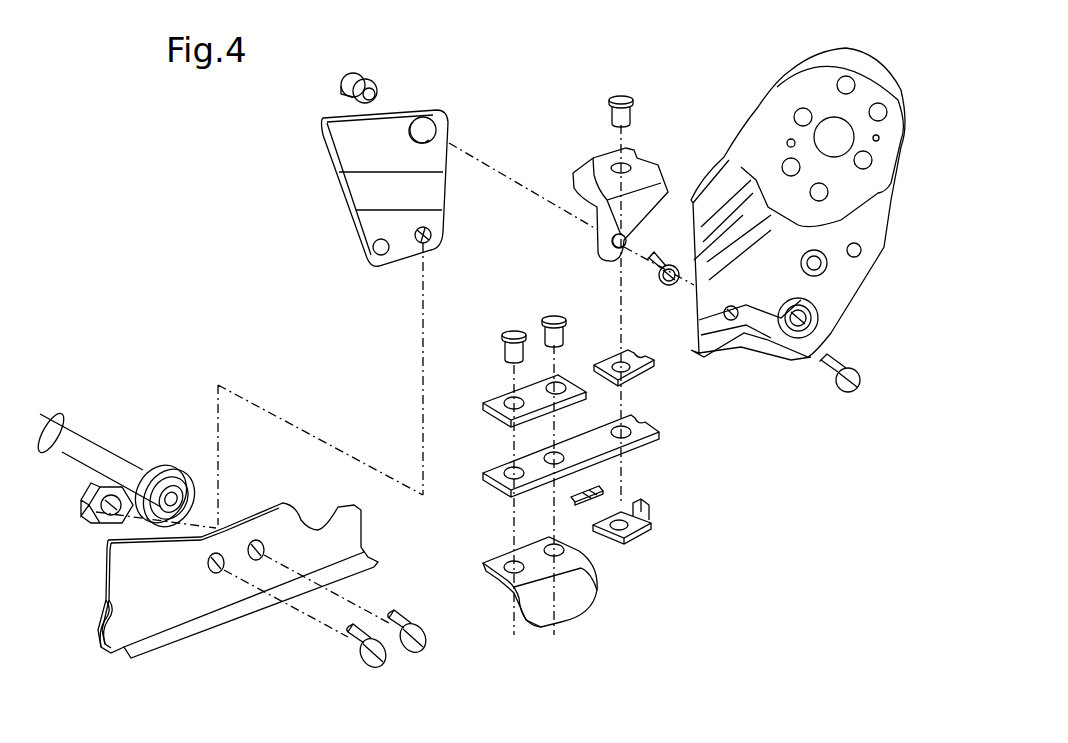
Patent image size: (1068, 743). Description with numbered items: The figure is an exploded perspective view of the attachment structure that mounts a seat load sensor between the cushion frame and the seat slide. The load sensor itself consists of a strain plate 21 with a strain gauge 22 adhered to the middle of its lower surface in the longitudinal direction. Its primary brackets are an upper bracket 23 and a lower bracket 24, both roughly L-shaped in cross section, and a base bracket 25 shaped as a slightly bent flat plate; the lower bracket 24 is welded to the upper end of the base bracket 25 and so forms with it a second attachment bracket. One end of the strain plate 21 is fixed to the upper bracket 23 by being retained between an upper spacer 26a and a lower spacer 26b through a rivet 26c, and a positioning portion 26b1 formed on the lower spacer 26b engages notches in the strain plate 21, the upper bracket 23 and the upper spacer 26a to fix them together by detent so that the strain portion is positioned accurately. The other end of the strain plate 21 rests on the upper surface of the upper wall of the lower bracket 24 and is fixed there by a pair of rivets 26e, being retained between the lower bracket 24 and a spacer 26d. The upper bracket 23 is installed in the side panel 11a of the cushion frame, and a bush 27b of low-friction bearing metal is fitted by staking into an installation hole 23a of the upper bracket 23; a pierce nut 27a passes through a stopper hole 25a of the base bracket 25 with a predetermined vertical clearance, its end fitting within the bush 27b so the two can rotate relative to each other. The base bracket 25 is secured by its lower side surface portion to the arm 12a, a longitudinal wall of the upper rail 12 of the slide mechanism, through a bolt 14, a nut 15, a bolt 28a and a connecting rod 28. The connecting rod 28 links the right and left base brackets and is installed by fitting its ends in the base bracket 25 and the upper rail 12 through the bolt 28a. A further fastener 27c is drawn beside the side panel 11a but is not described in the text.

The side panel 11a is at (717, 345).
The upper rail 12 is at (190, 637).
The arm 12a is at (105, 568).
The bolt 14 is at (370, 668).
The nut 15 is at (85, 505).
The strain plate 21 is at (500, 476).
The strain gauge 22 is at (600, 488).
The upper bracket 23 is at (655, 185).
The installation hole 23a is at (612, 243).
The lower bracket 24 is at (578, 600).
The base bracket 25 is at (345, 192).
The stopper hole 25a is at (422, 118).
The upper spacer 26a is at (640, 380).
The lower spacer 26b is at (643, 540).
The positioning portion 26b1 is at (648, 507).
The rivet 26c is at (625, 90).
The spacer 26d is at (497, 398).
The rivets 26e is at (550, 315).
The pierce nut 27a is at (362, 78).
The bush 27b is at (663, 285).
The bolt 27c is at (836, 385).
The connecting rod 28 is at (95, 435).
The bolt 28a is at (412, 652).